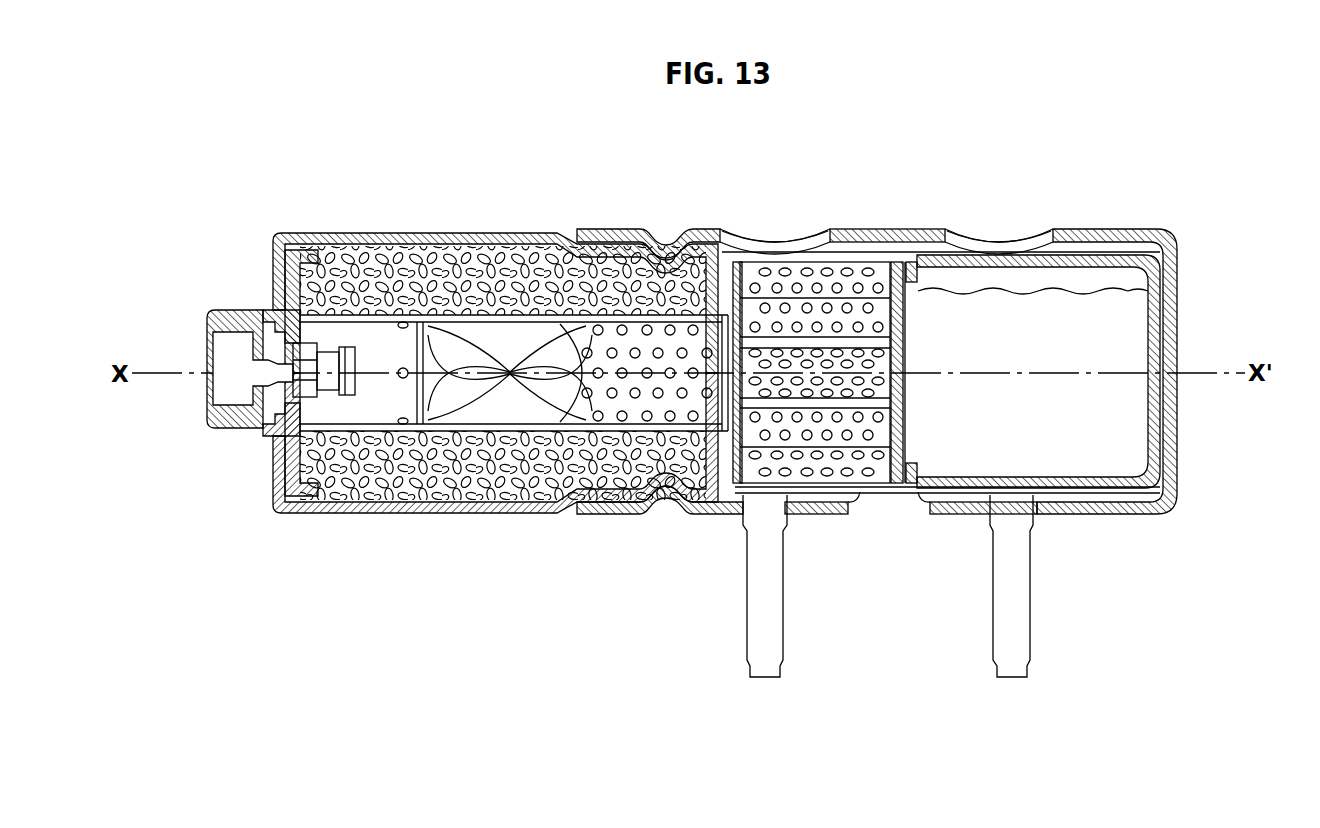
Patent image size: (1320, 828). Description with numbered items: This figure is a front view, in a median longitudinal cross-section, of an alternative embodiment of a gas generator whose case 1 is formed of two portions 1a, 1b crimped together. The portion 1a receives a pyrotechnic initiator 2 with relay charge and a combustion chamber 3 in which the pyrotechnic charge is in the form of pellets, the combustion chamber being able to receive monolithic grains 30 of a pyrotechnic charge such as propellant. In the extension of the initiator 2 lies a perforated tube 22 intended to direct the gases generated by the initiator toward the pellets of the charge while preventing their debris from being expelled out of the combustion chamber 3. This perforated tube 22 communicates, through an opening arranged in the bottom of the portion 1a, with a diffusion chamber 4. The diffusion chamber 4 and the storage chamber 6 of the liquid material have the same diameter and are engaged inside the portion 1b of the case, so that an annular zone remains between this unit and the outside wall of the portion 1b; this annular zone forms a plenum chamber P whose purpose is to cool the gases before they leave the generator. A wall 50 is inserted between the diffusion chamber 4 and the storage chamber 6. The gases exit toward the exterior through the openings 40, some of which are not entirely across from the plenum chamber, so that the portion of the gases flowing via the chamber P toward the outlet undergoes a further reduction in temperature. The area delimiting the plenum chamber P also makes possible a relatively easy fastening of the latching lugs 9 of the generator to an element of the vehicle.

The case 1 is at (832, 172).
The first portion of the case 1a is at (398, 243).
The second portion of the case 1b is at (698, 230).
The pyrotechnic initiator 2 is at (303, 350).
The combustion chamber 3 is at (470, 220).
The monolithic grain 30 is at (458, 257).
The perforated tube 22 is at (370, 407).
The openings 40 is at (776, 232).
The wall 50 is at (897, 462).
The diffusion chamber 4 is at (907, 494).
The storage chamber 6 is at (1122, 488).
The latching lugs 9 is at (768, 610).
The plenum chamber P is at (1102, 243).